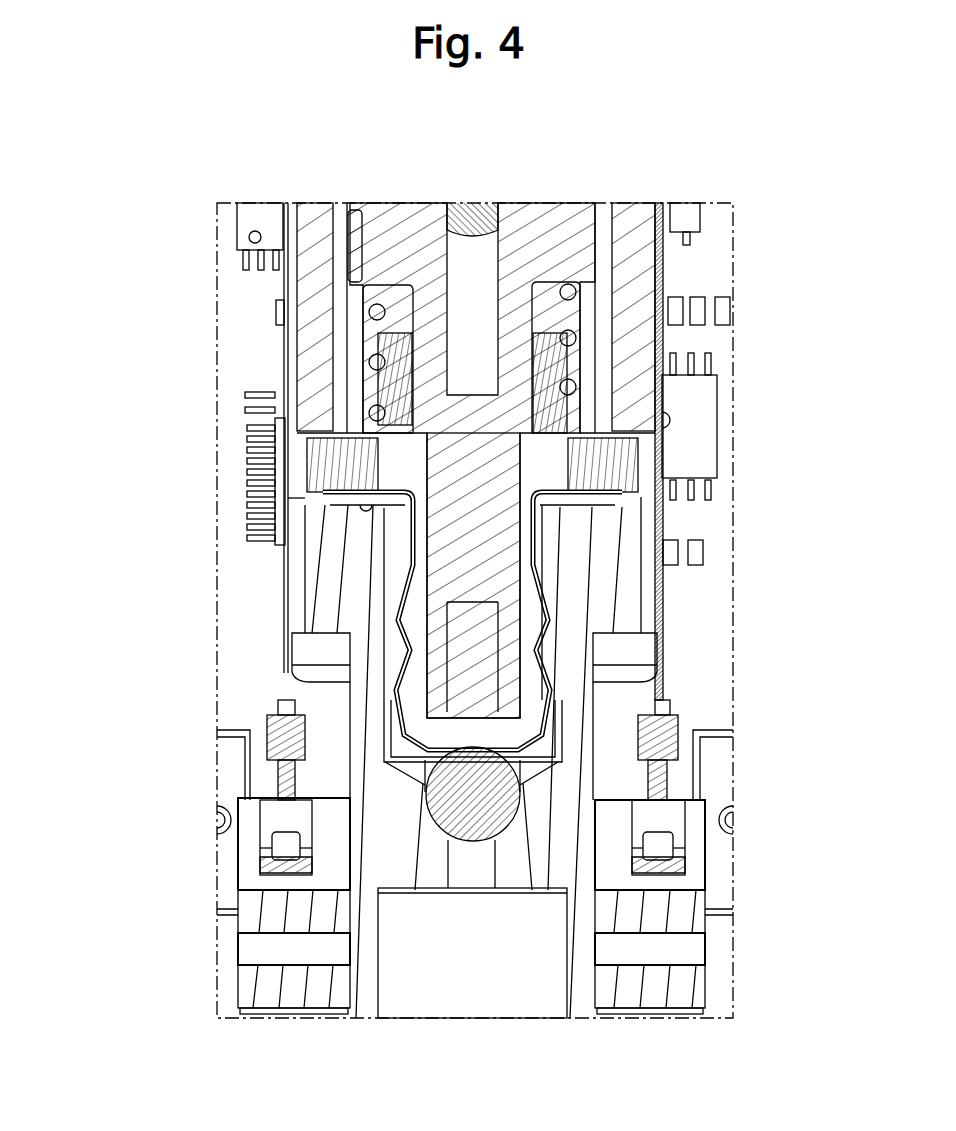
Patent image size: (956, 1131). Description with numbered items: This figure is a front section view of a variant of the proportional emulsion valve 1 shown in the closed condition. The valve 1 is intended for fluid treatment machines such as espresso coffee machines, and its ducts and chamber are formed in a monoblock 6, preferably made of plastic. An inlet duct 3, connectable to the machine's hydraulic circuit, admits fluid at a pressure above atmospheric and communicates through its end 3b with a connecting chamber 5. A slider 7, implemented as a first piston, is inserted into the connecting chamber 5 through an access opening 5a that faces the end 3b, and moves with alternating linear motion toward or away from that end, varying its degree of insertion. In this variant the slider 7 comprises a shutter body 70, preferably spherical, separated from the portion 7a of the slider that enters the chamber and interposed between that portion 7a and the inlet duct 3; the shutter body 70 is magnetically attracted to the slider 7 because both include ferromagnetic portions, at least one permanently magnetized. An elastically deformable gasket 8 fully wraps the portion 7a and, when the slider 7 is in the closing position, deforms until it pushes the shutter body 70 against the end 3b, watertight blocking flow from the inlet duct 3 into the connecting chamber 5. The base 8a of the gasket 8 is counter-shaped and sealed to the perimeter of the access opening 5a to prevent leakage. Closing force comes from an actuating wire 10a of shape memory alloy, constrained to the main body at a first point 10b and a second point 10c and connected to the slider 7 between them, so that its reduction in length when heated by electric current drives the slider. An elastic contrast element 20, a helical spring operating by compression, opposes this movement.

The proportional emulsion valve 1 is at (135, 158).
The elastic contrast element 20 is at (586, 328).
The slider 7 is at (450, 403).
The access opening 5a is at (542, 485).
The portion of the slider 7a is at (512, 540).
The base of the gasket 8a is at (370, 507).
The gasket 8 is at (556, 612).
The actuating wire 10a is at (276, 681).
The connecting chamber 5 is at (566, 736).
The shutter body 70 is at (500, 797).
The first point of constraint 10b is at (230, 875).
The second point of constraint 10c is at (714, 853).
The monoblock 6 is at (714, 987).
The end of the inlet duct 3b is at (430, 836).
The inlet duct 3 is at (472, 888).